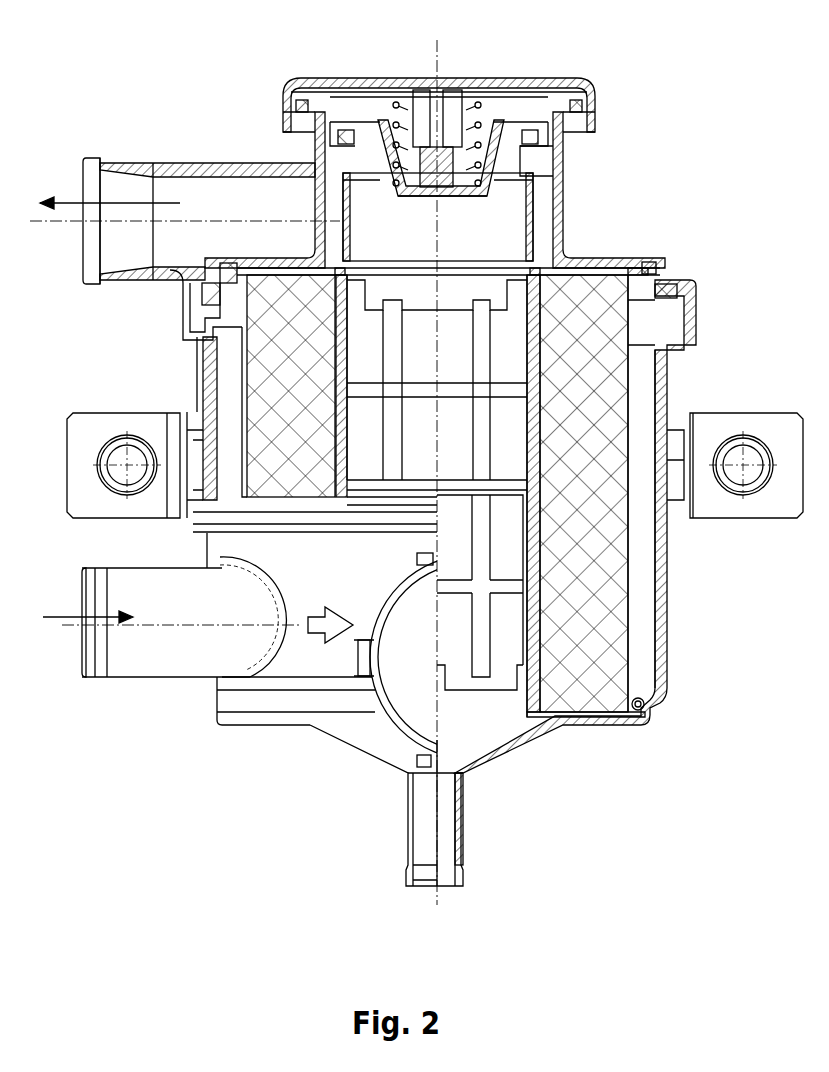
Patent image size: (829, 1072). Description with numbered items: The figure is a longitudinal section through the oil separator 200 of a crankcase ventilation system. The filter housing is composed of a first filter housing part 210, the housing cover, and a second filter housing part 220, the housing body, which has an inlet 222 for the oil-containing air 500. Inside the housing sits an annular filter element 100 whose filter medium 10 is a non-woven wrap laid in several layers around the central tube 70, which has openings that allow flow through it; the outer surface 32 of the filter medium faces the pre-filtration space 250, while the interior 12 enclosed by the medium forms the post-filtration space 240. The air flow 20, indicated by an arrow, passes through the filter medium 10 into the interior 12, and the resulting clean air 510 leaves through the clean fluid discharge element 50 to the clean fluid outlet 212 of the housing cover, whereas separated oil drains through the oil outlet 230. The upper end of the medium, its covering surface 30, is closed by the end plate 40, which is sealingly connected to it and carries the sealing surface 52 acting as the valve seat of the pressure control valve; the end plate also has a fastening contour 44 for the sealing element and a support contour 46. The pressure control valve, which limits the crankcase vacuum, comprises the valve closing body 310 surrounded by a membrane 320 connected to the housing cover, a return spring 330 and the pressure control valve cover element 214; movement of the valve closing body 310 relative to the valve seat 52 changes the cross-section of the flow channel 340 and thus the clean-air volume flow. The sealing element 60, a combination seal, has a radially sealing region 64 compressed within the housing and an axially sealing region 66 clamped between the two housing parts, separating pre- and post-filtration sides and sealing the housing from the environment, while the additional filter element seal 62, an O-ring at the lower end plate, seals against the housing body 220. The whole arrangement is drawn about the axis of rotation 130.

The oil separator 200 is at (131, 97).
The first filter housing part 210 is at (165, 163).
The clean fluid 510 is at (75, 203).
The clean fluid outlet 212 is at (128, 241).
The sealing surface 52 is at (347, 170).
The return spring 330 is at (400, 120).
The axis of rotation 130 is at (439, 78).
The pressure control valve cover element 214 is at (491, 78).
The flow channel 340 is at (528, 158).
The covering surface 30 is at (577, 252).
The sealing element 60 is at (648, 272).
The valve closing body sealing element 320 is at (368, 178).
The clean fluid discharge element 50 is at (438, 217).
The valve closing body 310 is at (490, 198).
The end plate 40 is at (300, 268).
The fastening contour 44 is at (232, 262).
The radially sealing region 64 is at (205, 280).
The axially sealing region 66 is at (200, 300).
The filter element 100 is at (237, 390).
The support contour 46 is at (228, 332).
The interior 12 is at (438, 493).
The post-filtration space 240 is at (454, 426).
The pre-filtration space 250 is at (643, 330).
The filter medium 10 is at (605, 437).
The pre-filtration fluid 500 is at (60, 617).
The inlet 222 is at (228, 629).
The air flow 20 is at (330, 603).
The second filter housing part 220 is at (667, 565).
The outer surface 32 is at (630, 640).
The additional filter element seal 62 is at (645, 704).
The central tube 70 is at (484, 632).
The oil outlet 230 is at (437, 888).